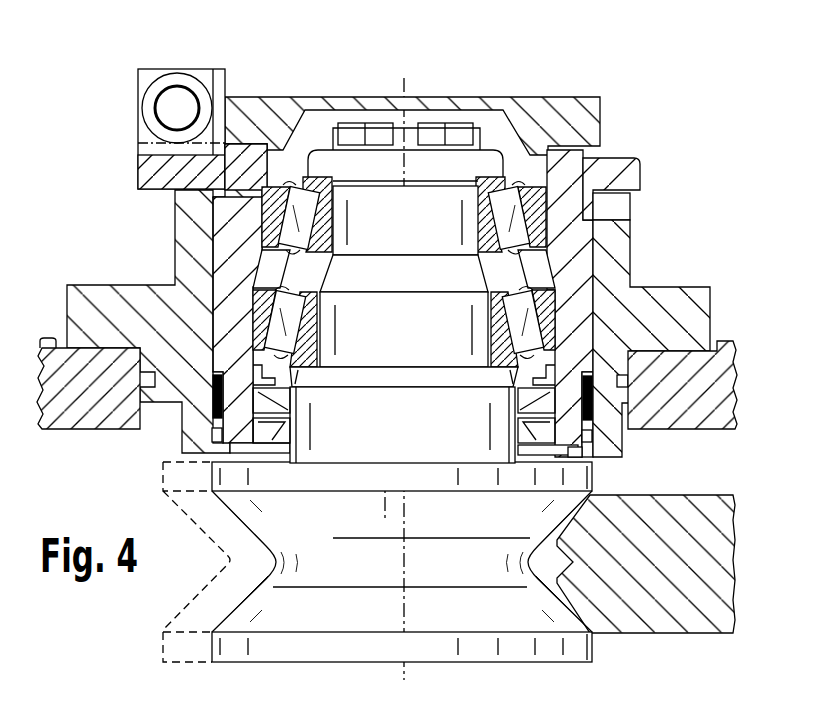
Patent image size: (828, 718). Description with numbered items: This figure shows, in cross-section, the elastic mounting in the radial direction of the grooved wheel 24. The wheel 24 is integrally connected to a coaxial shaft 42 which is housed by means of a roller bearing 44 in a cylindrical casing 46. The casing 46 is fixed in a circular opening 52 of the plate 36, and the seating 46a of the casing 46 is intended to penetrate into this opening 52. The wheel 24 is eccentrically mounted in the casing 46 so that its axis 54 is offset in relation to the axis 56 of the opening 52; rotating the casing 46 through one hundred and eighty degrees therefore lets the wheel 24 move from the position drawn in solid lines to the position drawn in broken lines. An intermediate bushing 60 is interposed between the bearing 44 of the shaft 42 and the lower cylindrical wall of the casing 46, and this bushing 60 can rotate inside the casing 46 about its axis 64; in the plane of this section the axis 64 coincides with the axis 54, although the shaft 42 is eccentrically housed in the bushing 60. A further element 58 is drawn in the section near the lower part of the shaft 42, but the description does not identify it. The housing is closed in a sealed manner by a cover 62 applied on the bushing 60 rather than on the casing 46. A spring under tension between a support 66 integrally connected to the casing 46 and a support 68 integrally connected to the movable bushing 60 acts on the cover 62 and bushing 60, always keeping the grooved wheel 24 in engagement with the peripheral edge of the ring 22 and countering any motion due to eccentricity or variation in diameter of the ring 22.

The ring 22 is at (663, 496).
The grooved wheel 24 is at (290, 537).
The plate 36 is at (730, 341).
The shaft 42 is at (440, 244).
The roller bearing 44 is at (547, 238).
The cylindrical casing 46 is at (628, 200).
The seating 46a is at (125, 287).
The circular opening 52 is at (146, 424).
The axis 54 is at (405, 415).
The axis 56 is at (385, 396).
The seal 58 is at (289, 423).
The intermediate bushing 60 is at (575, 233).
The cover 62 is at (284, 106).
The axis 64 is at (405, 444).
The support 66 is at (216, 82).
The support 68 is at (140, 136).